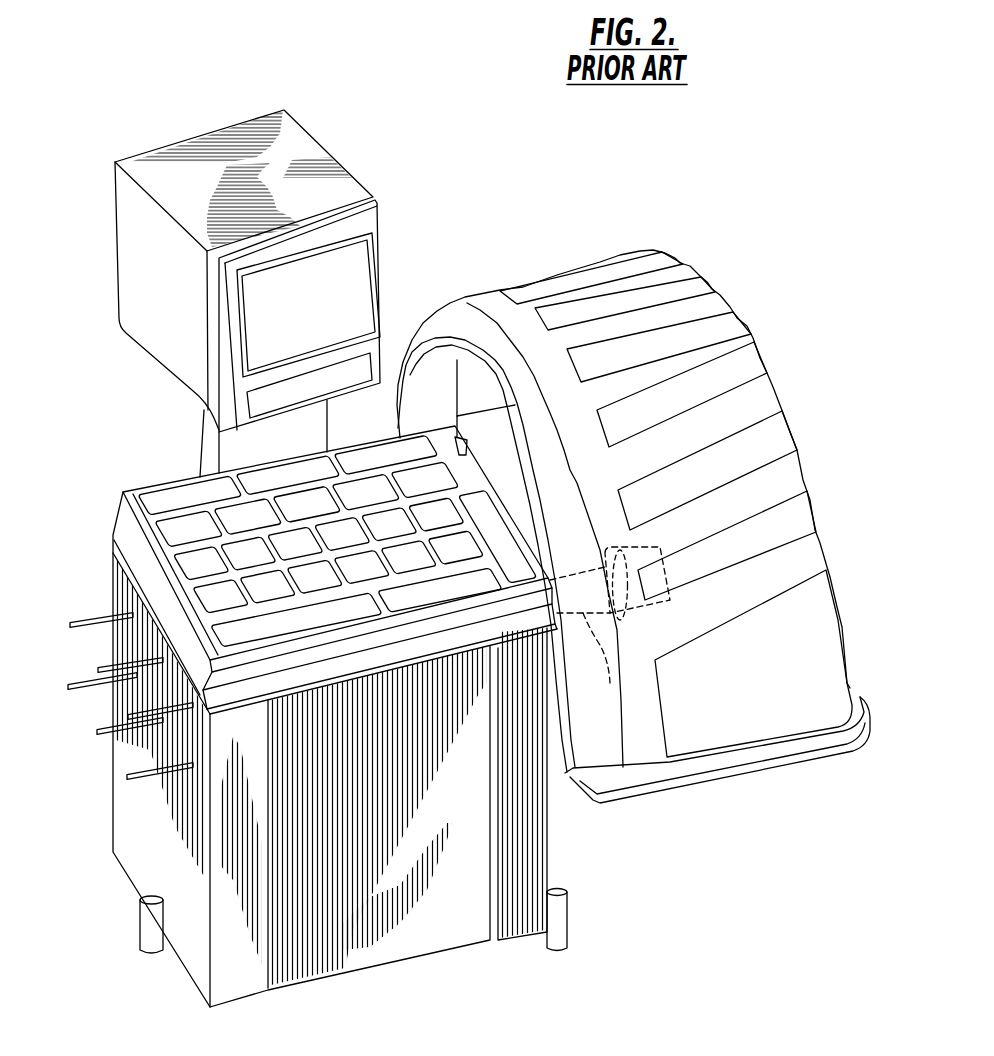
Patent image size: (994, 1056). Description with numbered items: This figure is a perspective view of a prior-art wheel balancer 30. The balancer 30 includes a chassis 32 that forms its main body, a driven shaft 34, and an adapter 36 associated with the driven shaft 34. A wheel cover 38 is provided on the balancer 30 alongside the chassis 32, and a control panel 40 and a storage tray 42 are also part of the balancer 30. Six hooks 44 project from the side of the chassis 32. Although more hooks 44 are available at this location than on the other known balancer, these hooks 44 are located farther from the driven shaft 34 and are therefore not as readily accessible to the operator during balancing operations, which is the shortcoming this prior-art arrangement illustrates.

The balancer 30 is at (304, 564).
The chassis 32 is at (340, 789).
The driven shaft 34 is at (600, 665).
The adapter 36 is at (610, 612).
The wheel cover 38 is at (633, 526).
The control panel 40 is at (240, 289).
The storage tray 42 is at (306, 537).
The hooks 44 is at (130, 737).